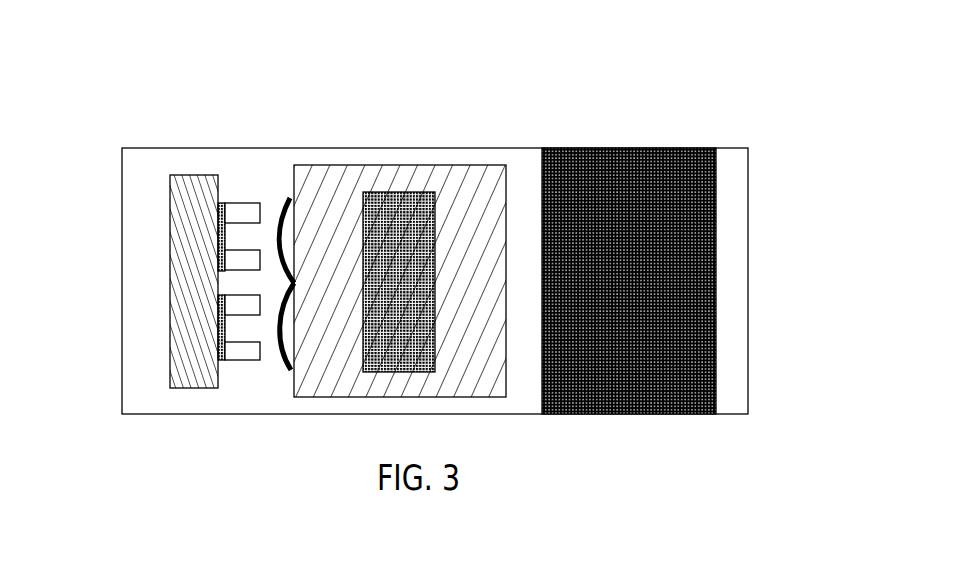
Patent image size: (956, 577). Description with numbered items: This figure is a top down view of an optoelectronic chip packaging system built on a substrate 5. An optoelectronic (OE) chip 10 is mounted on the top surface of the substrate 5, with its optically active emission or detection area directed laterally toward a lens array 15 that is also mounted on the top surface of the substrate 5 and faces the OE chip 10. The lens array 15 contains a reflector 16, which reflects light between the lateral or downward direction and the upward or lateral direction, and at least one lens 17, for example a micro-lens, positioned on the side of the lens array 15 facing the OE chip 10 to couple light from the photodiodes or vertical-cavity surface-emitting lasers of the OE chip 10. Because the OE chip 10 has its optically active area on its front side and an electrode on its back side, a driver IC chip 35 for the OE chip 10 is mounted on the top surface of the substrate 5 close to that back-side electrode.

The substrate 5 is at (728, 270).
The optoelectronic (OE) chip 10 is at (193, 270).
The lens array 15 is at (357, 173).
The reflector 16 is at (399, 282).
The lens 17 is at (288, 197).
The driver IC chip 35 is at (628, 177).